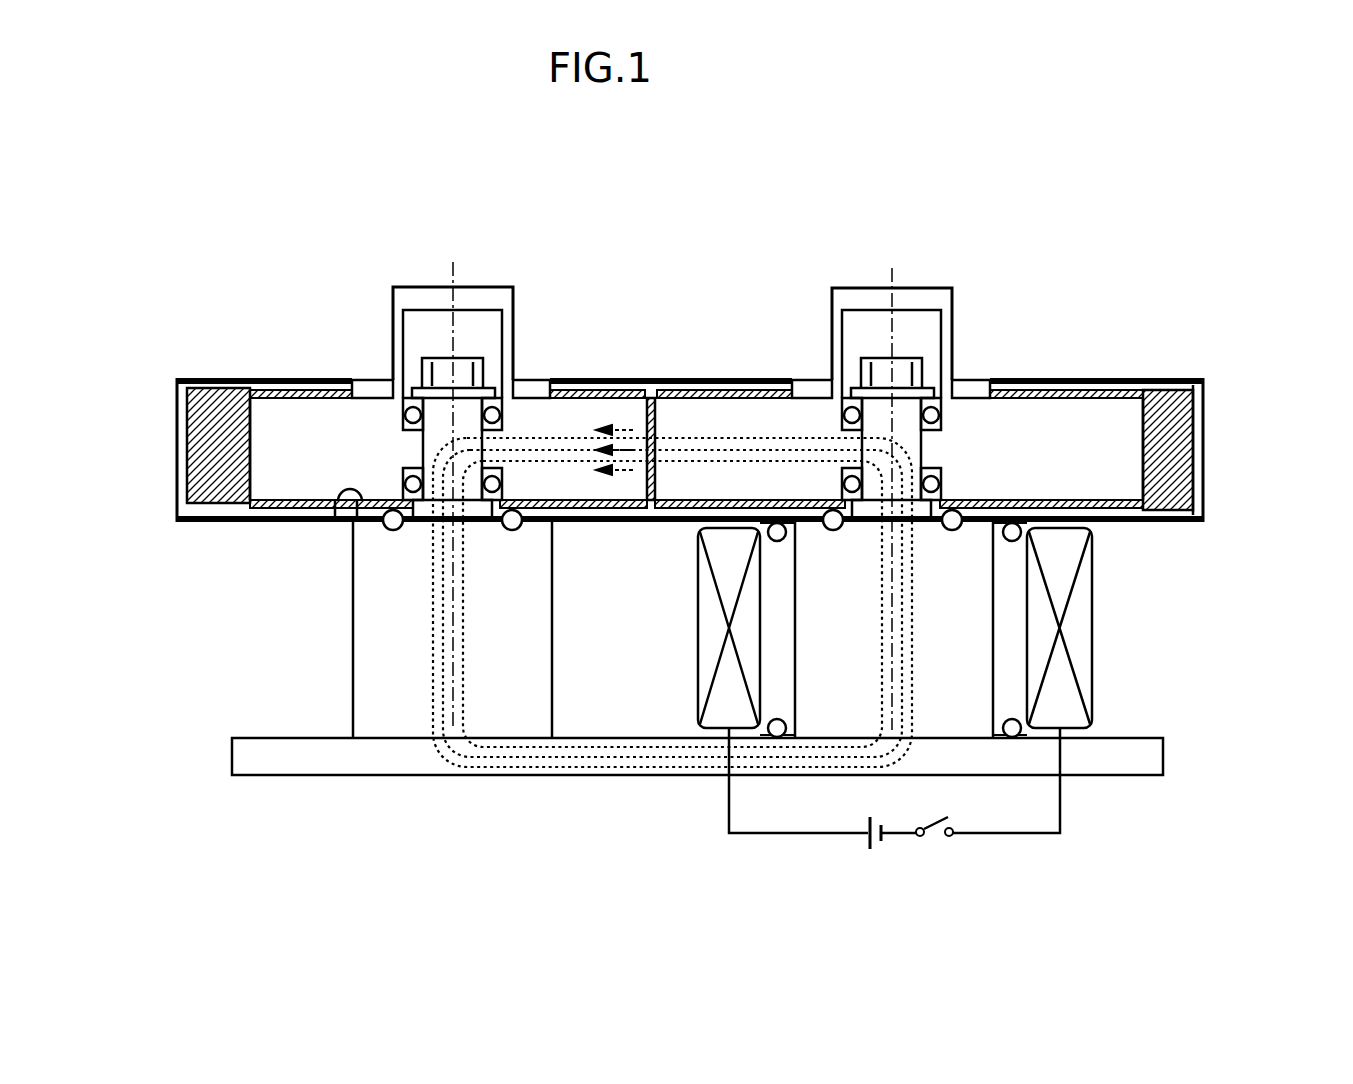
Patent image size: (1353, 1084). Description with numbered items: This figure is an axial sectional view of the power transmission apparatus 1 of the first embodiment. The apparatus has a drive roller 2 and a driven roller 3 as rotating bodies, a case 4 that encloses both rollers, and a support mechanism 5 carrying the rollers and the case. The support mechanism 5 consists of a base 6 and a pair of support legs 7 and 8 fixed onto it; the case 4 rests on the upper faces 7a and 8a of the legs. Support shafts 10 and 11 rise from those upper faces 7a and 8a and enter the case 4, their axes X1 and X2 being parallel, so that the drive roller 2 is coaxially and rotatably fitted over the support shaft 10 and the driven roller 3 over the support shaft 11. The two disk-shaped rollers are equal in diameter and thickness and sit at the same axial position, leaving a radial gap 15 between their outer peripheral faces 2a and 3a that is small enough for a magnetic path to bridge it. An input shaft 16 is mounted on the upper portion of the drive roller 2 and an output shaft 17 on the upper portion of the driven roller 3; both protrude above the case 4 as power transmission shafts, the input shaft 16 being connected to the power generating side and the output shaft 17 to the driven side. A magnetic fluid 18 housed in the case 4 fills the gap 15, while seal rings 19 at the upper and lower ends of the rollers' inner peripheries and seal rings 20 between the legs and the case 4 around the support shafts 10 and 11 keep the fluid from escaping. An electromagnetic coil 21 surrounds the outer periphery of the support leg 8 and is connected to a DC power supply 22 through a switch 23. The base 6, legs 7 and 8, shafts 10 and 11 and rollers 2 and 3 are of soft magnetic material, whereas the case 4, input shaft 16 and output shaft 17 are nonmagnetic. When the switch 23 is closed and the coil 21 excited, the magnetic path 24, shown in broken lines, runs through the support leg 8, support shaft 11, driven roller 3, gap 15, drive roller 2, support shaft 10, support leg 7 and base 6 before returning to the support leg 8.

The power transmission apparatus 1 is at (1143, 172).
The drive roller 2 is at (285, 412).
The outer peripheral face 2a is at (677, 502).
The driven roller 3 is at (1095, 417).
The outer peripheral face 3a is at (632, 502).
The case 4 is at (1182, 383).
The support mechanism 5 is at (240, 640).
The base 6 is at (1150, 752).
The support leg 7 is at (368, 697).
The upper face 7a is at (335, 522).
The support leg 8 is at (975, 655).
The upper face 8a is at (1070, 503).
The support shaft 10 is at (430, 443).
The support shaft 11 is at (910, 445).
The gap 15 is at (650, 400).
The input shaft 16 is at (495, 293).
The output shaft 17 is at (938, 296).
The magnetic fluid 18 is at (1178, 463).
The seal rings 19 is at (403, 483).
The seal rings 20 is at (393, 521).
The electromagnetic coil 21 is at (1085, 598).
The DC power supply 22 is at (873, 853).
The switch 23 is at (936, 843).
The magnetic path 24 is at (553, 778).
The axis X1 is at (447, 268).
The axis X2 is at (895, 270).